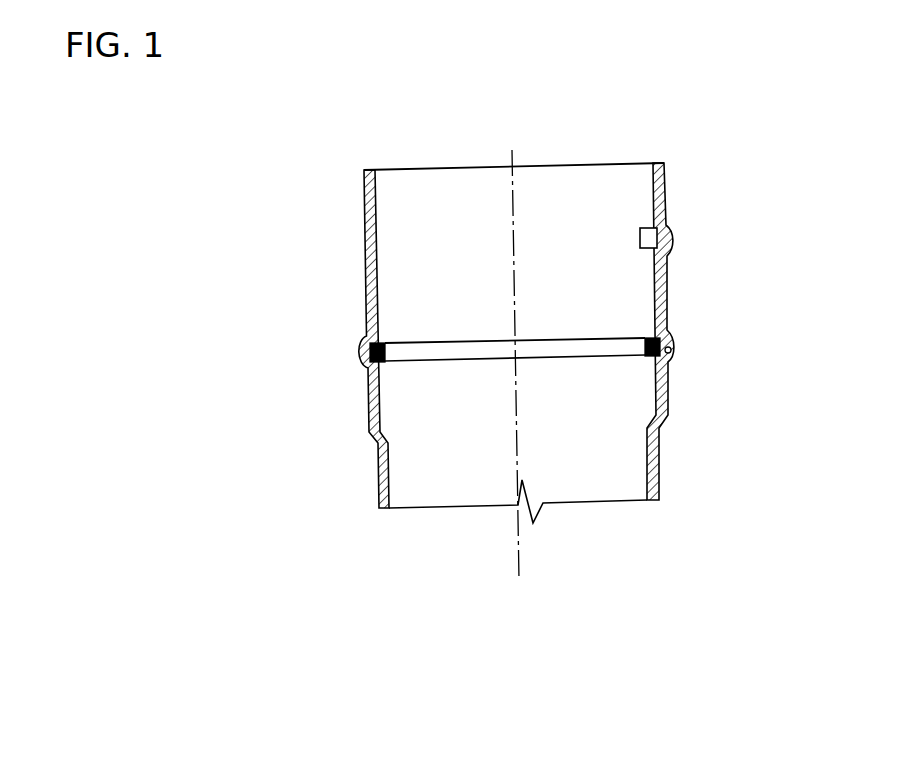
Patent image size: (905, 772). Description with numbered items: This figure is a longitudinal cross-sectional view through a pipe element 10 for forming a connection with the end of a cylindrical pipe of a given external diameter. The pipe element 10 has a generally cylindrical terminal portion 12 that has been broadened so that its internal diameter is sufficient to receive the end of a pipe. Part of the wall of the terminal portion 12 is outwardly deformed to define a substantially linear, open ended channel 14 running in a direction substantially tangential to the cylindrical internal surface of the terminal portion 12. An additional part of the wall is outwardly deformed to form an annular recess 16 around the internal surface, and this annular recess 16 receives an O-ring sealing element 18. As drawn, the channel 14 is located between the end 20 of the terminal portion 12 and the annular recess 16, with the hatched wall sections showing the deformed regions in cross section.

The pipe element 10 is at (738, 121).
The terminal portion 12 is at (352, 197).
The channel 14 is at (673, 240).
The annular recess 16 is at (672, 355).
The O-ring sealing element 18 is at (672, 349).
The end of terminal portion 20 is at (664, 165).